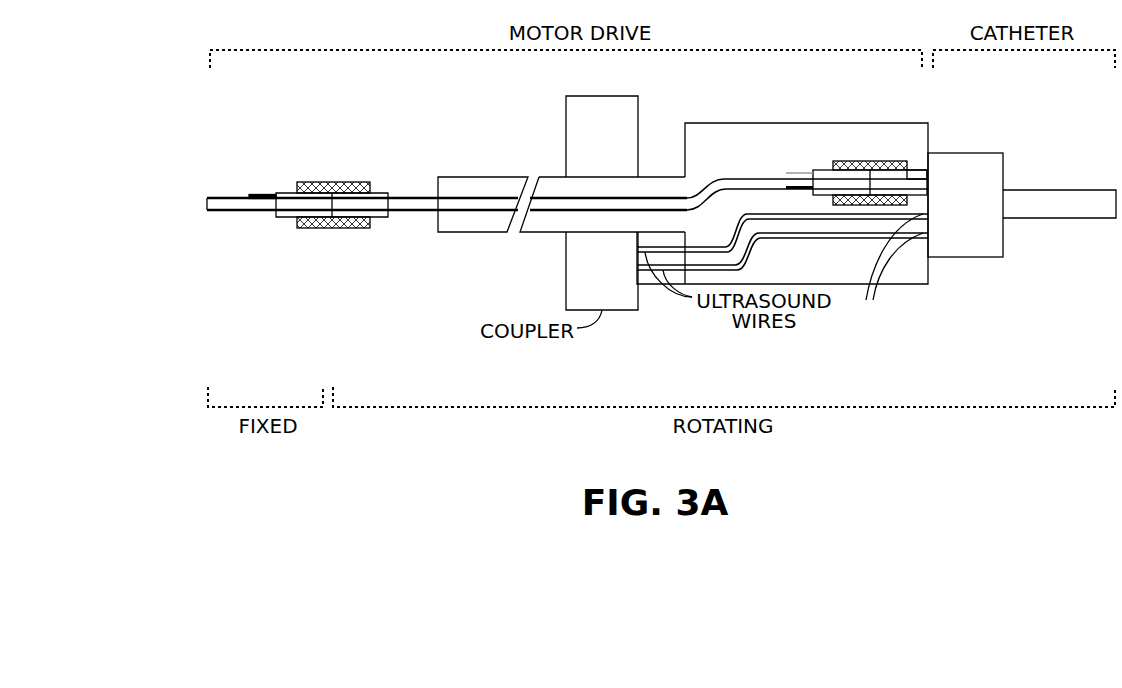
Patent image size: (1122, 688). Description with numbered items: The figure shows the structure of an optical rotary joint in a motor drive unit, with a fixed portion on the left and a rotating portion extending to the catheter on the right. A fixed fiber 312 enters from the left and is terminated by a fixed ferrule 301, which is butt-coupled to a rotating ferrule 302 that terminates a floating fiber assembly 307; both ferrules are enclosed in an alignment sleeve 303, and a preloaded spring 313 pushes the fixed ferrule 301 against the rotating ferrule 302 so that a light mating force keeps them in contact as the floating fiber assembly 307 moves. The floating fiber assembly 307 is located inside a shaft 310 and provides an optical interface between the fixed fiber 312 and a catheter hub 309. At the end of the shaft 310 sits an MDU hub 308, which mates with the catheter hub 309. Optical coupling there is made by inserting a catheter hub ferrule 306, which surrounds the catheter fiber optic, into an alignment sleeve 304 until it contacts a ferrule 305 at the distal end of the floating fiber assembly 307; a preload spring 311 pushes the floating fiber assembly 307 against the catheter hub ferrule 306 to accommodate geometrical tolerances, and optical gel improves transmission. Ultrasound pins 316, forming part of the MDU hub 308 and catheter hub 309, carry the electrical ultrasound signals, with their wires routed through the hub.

The fixed ferrule 301 is at (287, 193).
The rotating ferrule 302 is at (378, 193).
The alignment sleeve 303 is at (318, 182).
The alignment sleeve 304 is at (913, 168).
The ferrule 305 is at (821, 170).
The catheter hub ferrule 306 is at (855, 161).
The floating fiber assembly 307 is at (362, 241).
The MDU hub 308 is at (782, 188).
The catheter hub 309 is at (963, 258).
The shaft 310 is at (507, 175).
The preload spring 311 is at (790, 172).
The fixed fiber 312 is at (215, 198).
The preloaded spring 313 is at (272, 213).
The ultrasound pins 316 is at (919, 291).